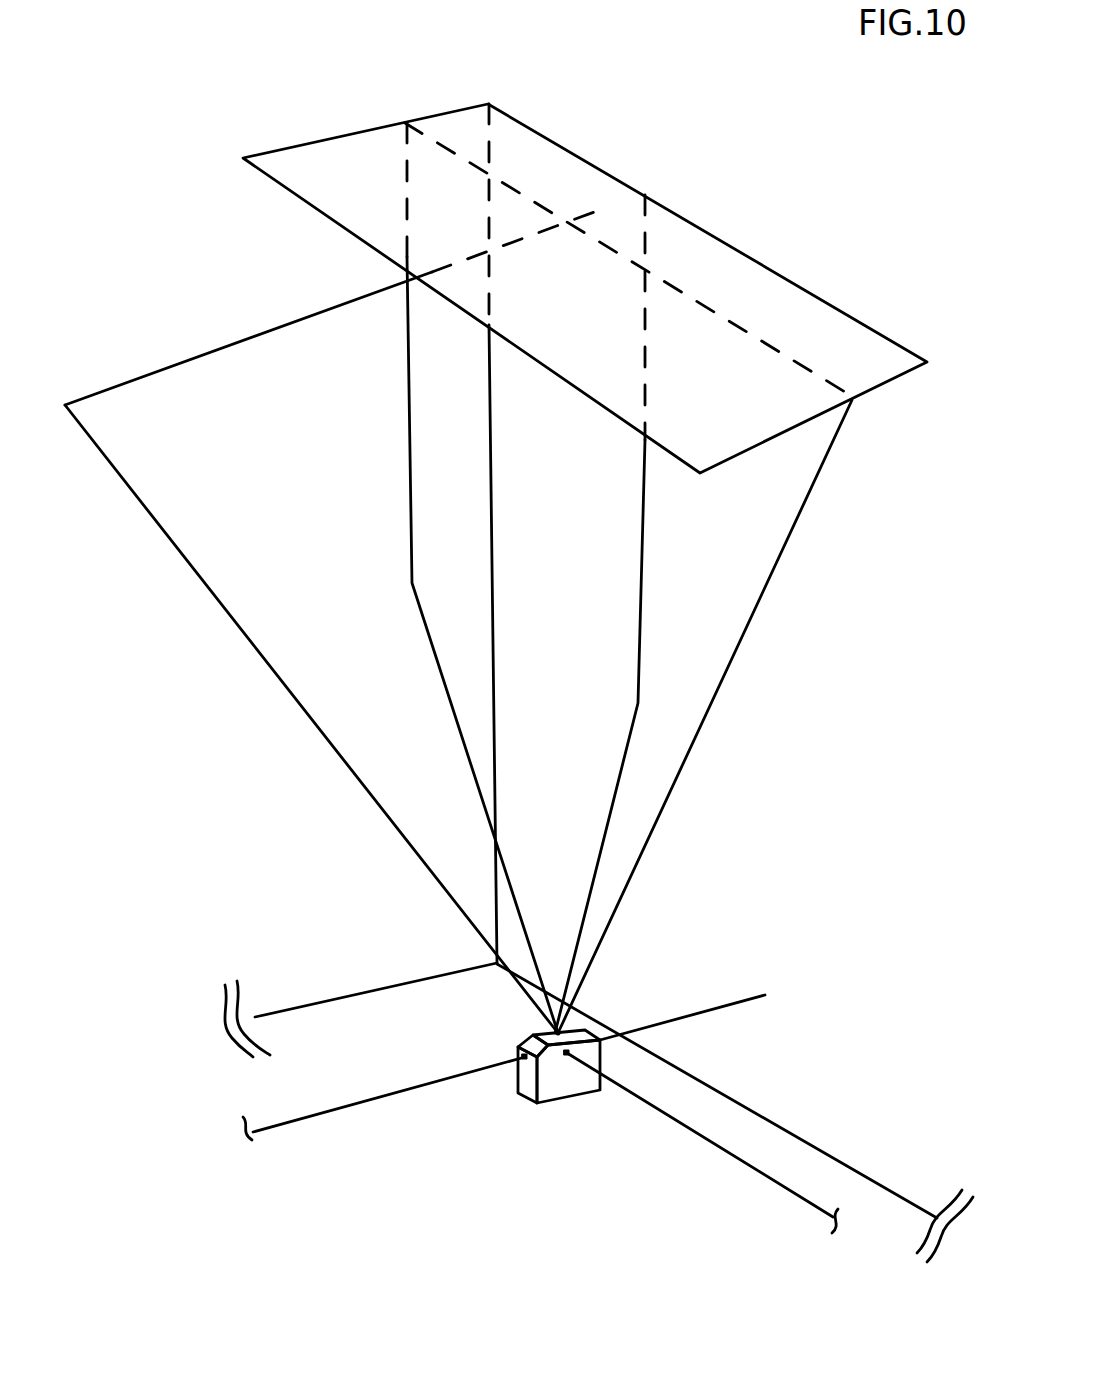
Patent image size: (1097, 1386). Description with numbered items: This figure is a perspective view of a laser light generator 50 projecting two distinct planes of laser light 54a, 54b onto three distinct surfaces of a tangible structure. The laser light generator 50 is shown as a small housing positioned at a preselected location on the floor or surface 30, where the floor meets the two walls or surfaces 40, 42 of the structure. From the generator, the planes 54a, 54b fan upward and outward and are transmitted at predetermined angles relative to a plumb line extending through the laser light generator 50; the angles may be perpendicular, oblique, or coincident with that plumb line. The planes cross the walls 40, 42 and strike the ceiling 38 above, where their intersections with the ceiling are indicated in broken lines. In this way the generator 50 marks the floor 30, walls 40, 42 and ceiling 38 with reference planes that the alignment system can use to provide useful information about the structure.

The ceiling 38 is at (340, 172).
The wall or surface 42 is at (297, 827).
The plane of laser light 54a is at (703, 300).
The plane of laser light 54b is at (598, 208).
The wall or surface 40 is at (865, 957).
The floor or surface 30 is at (647, 1245).
The laser light generator 50 is at (570, 1105).